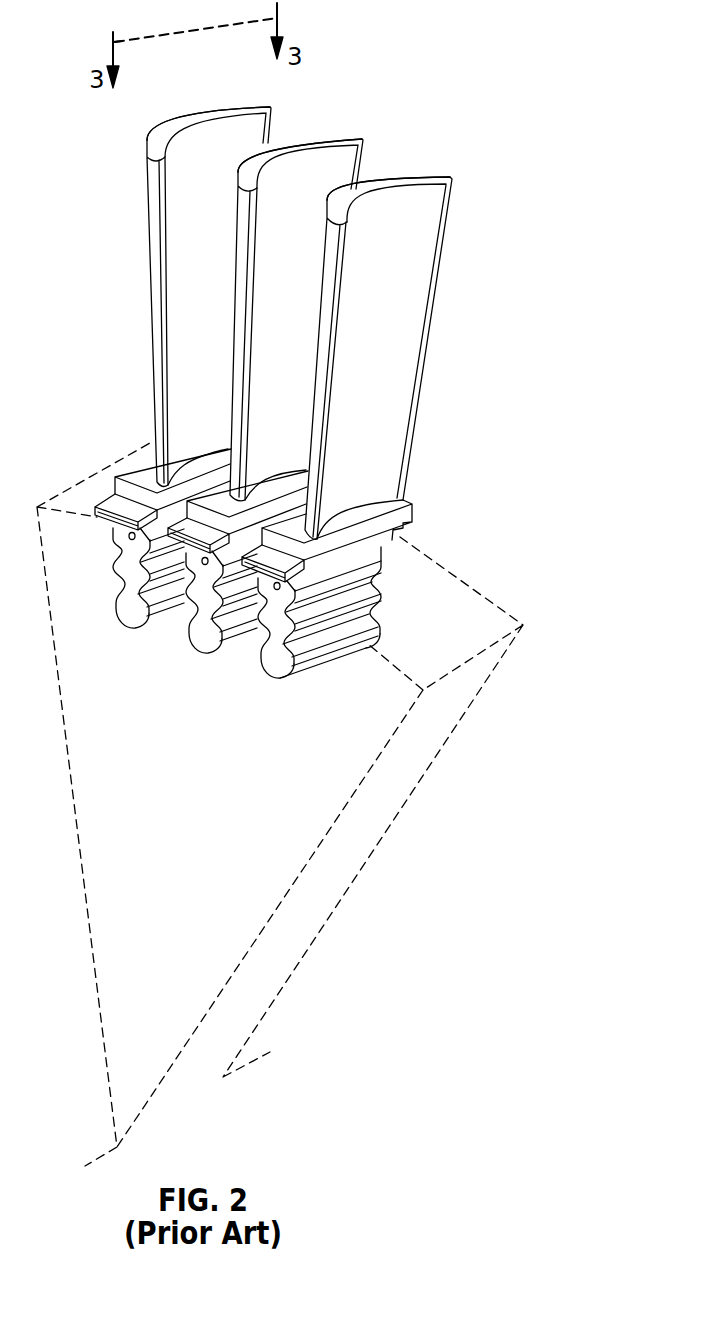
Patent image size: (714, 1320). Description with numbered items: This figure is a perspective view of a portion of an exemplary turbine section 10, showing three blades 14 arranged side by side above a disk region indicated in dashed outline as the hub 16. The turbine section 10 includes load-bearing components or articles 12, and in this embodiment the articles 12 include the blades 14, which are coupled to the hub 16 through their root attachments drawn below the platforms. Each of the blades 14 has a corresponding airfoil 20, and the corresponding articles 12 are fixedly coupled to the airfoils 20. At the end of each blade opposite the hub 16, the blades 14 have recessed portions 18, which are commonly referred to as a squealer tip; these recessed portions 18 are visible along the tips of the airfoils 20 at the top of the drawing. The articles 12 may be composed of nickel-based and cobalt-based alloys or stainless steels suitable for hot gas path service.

The turbine section 10 is at (493, 57).
The articles 12 is at (451, 224).
The blades 14 is at (182, 218).
The hub 16 is at (372, 845).
The recessed portions 18 is at (151, 131).
The airfoils 20 is at (413, 300).